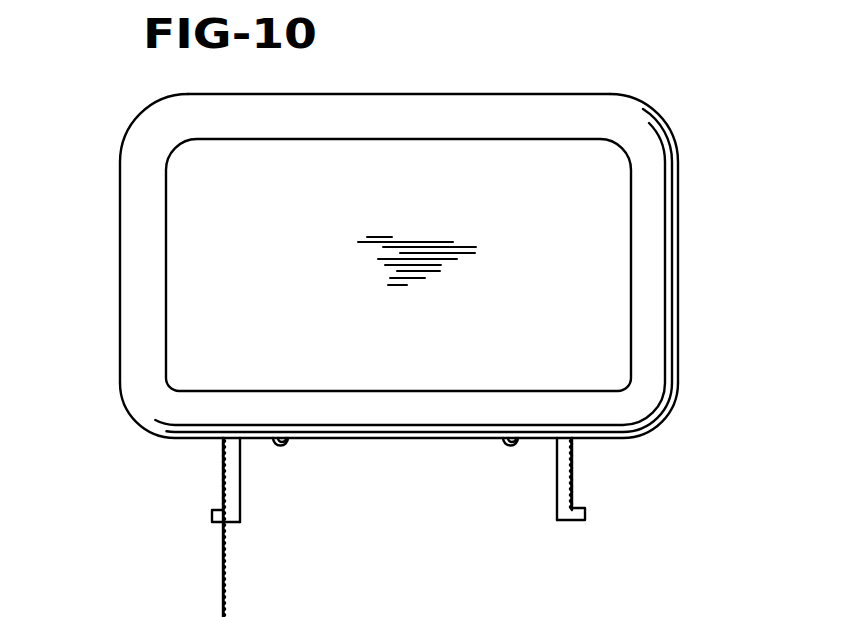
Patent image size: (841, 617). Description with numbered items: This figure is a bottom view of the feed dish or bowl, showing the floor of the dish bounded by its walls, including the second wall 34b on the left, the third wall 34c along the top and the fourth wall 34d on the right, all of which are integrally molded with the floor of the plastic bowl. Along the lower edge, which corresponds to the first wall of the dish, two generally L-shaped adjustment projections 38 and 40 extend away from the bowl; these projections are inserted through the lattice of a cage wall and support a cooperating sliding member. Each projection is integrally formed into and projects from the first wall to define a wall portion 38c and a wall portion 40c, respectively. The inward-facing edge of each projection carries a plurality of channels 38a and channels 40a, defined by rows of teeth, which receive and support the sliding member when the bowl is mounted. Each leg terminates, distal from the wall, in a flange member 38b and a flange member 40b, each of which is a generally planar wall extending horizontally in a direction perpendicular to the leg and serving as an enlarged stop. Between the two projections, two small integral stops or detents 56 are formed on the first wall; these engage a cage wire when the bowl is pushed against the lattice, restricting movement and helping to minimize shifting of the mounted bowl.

The second wall 34b is at (120, 257).
The third wall 34c is at (434, 94).
The fourth wall 34d is at (678, 256).
The stop or detent 56 is at (505, 452).
The projection 38 is at (211, 527).
The channels 38a is at (205, 477).
The flange member 38b is at (212, 515).
The wall portion 38c is at (240, 490).
The projection 40 is at (602, 527).
The channels 40a is at (610, 468).
The flange member 40b is at (588, 512).
The wall portion 40c is at (557, 489).